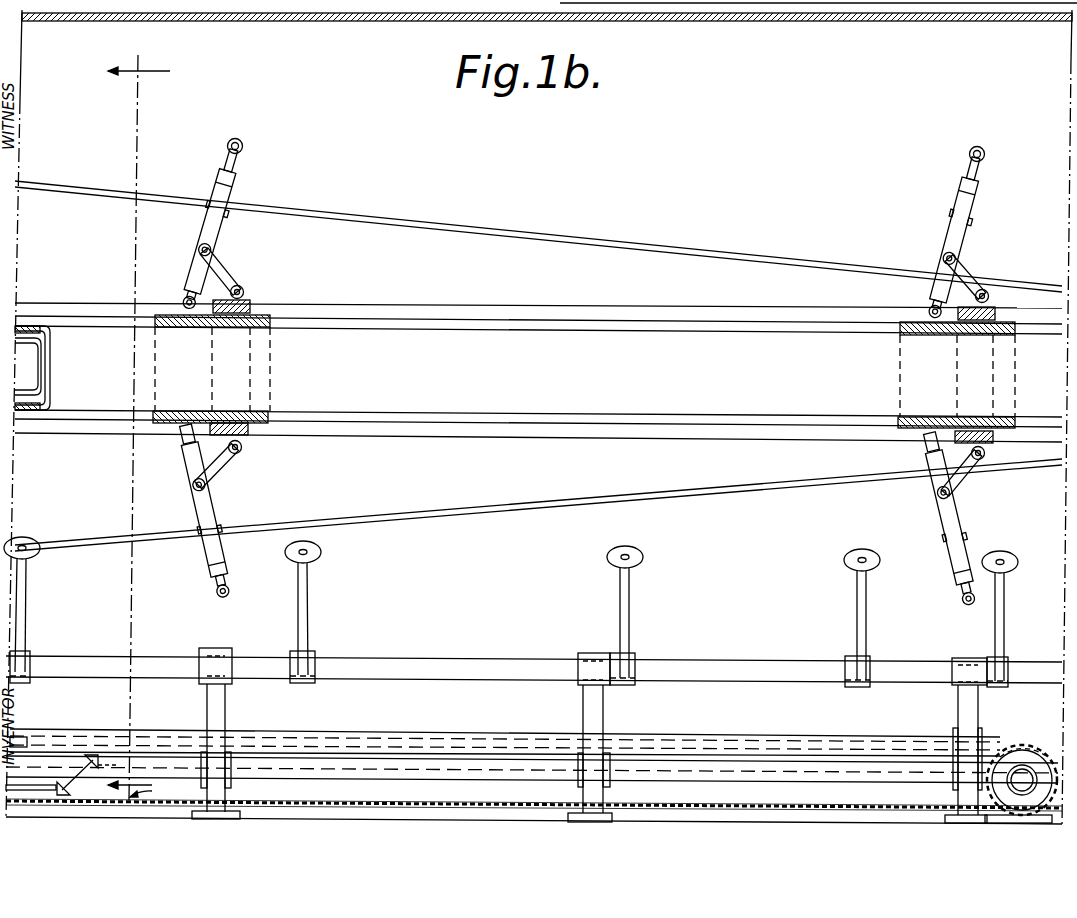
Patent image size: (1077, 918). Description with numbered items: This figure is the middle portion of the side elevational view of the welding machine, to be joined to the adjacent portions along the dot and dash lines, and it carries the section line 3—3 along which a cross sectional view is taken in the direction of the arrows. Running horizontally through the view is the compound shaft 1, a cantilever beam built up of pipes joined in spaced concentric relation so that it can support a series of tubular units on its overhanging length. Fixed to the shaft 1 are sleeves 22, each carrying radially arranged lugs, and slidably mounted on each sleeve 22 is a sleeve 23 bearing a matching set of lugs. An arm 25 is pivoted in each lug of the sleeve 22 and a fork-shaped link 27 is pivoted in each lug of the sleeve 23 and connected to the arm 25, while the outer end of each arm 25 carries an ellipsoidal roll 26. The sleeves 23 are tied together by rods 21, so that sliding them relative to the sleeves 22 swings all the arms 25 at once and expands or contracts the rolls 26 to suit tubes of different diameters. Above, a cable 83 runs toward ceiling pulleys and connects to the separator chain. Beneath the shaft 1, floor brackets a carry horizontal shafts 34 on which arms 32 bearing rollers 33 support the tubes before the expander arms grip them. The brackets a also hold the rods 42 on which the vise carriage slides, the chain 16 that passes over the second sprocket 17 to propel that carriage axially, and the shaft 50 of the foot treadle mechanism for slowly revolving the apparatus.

The shaft 1 is at (538, 372).
The section line 3— 3 is at (113, 413).
The chain 16 is at (490, 802).
The second sprocket 17 is at (1033, 768).
The rods 21 is at (107, 272).
The sleeve 22 is at (266, 313).
The sleeve 23 is at (247, 300).
The arm 25 is at (206, 228).
The roll 26 is at (242, 142).
The link 27 is at (214, 262).
The arm 32 is at (309, 585).
The roller 33 is at (322, 553).
The shaft 34 is at (414, 662).
The rods 42 is at (797, 742).
The shaft 50 is at (852, 780).
The cable 83 is at (770, 22).
The bracket a is at (207, 694).